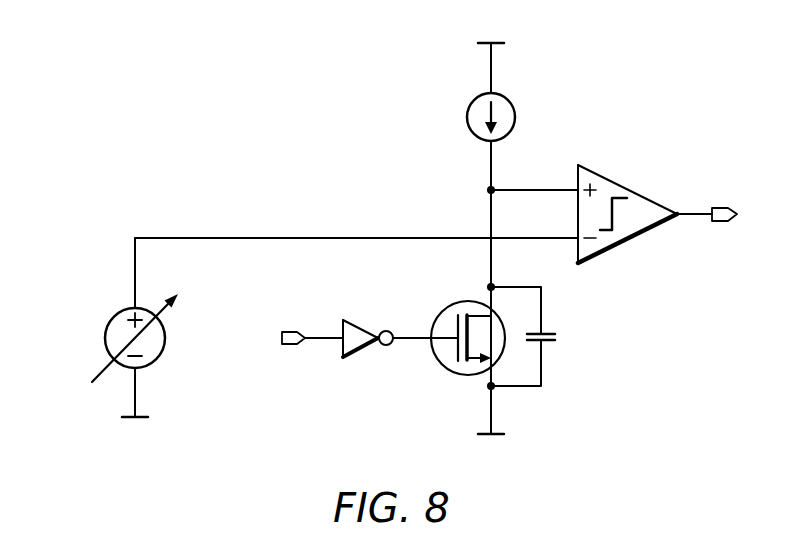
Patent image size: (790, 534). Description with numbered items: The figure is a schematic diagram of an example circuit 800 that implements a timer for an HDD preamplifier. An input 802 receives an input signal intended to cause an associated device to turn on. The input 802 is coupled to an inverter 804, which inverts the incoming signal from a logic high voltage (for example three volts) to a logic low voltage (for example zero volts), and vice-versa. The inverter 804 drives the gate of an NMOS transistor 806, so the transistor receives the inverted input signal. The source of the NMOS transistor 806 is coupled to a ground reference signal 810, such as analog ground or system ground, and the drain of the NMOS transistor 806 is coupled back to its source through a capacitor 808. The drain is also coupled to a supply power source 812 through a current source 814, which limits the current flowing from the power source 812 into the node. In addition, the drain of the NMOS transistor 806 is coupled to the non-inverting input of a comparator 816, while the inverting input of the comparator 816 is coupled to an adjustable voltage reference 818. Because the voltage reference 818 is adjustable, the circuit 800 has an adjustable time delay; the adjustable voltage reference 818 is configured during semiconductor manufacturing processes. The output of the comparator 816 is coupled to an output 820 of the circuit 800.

The circuit 800 is at (243, 77).
The input 802 is at (286, 345).
The inverter 804 is at (364, 324).
The NMOS transistor 806 is at (447, 368).
The capacitor 808 is at (554, 337).
The reference signal PGND 810 is at (137, 385).
The power source PVDD 812 is at (490, 67).
The current source 814 is at (517, 115).
The comparator 816 is at (620, 186).
The adjustable voltage reference VREF 818 is at (105, 338).
The output 820 is at (721, 208).